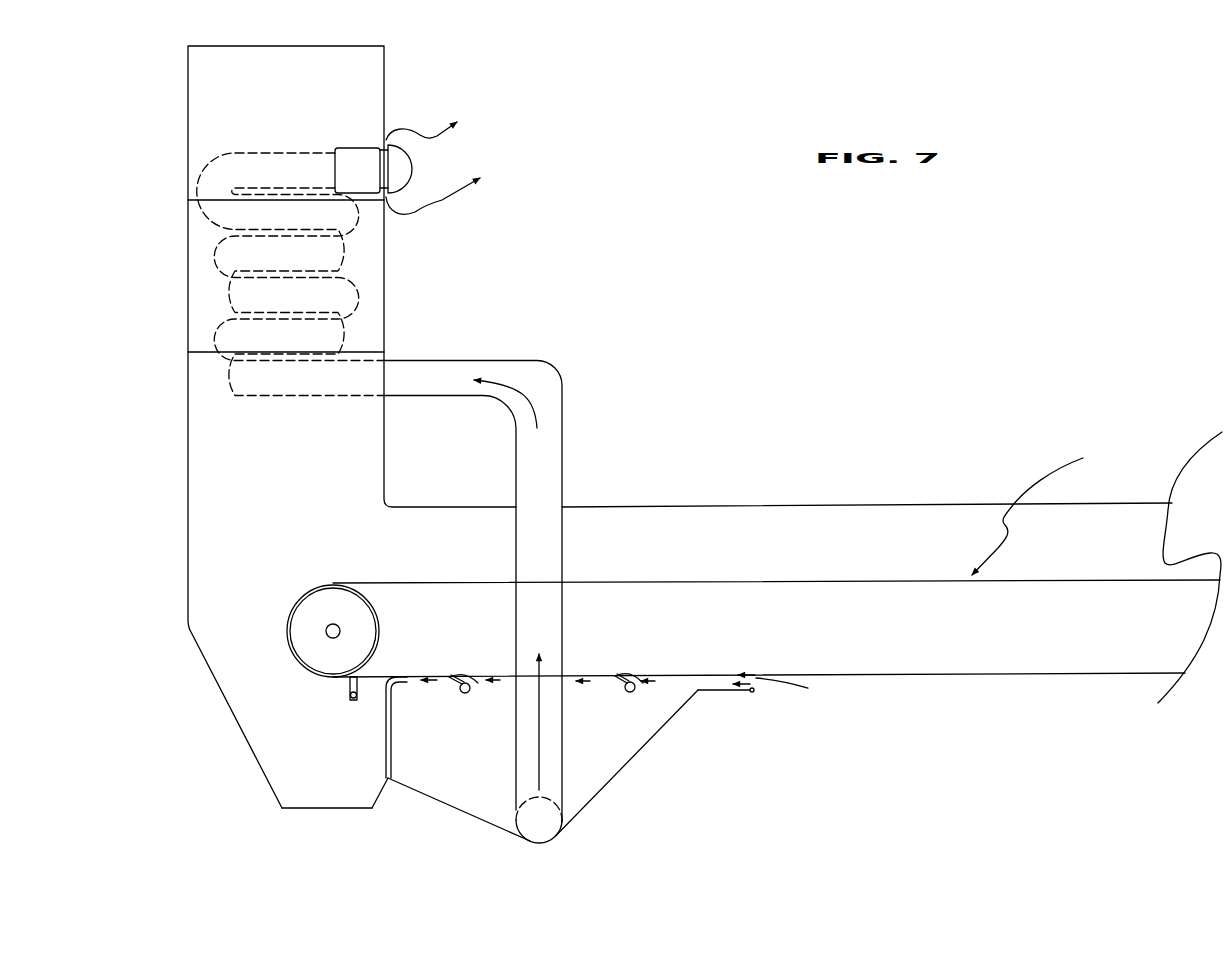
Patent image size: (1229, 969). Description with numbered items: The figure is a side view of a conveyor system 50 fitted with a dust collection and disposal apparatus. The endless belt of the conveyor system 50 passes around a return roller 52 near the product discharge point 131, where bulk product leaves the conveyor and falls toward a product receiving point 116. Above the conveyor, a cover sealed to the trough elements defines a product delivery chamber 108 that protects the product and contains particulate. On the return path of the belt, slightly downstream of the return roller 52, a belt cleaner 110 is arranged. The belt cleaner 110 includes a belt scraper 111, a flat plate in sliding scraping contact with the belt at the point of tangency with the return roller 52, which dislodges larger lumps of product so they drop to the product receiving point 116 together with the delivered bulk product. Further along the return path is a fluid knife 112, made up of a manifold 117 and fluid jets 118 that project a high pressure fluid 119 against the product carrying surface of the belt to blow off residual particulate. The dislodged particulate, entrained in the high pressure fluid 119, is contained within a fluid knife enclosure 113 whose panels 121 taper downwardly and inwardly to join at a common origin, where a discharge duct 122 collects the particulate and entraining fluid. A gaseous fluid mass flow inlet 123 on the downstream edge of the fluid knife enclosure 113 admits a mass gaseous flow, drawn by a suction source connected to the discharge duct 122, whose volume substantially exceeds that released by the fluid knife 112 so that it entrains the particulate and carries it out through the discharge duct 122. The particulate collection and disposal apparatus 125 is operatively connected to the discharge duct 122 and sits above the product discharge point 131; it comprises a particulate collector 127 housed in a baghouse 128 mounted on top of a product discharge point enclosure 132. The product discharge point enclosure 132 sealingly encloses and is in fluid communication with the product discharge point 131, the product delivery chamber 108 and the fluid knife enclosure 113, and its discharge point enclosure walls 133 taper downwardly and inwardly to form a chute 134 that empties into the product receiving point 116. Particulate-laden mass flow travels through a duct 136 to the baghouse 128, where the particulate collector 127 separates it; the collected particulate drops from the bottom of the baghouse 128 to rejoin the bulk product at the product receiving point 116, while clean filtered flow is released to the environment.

The conveyor system 50 is at (772, 384).
The return roller 52 is at (358, 628).
The product delivery chamber 108 is at (887, 510).
The belt cleaner 110 is at (459, 815).
The belt scraper 111 is at (350, 688).
The fluid knife 112 is at (459, 701).
The fluid knife enclosure 113 is at (386, 749).
The product receiving point 116 is at (340, 857).
The manifold 117 is at (469, 696).
The fluid jets 118 is at (475, 684).
The high pressure fluid 119 is at (448, 677).
The panels 121 is at (497, 826).
The discharge duct 122 is at (543, 834).
The gaseous fluid mass flow inlet 123 is at (758, 678).
The particulate collection and disposal apparatus 125 is at (188, 257).
The particulate collector 127 is at (363, 309).
The baghouse 128 is at (158, 174).
The product discharge point 131 is at (261, 581).
The product discharge point enclosure 132 is at (372, 476).
The discharge point enclosure walls 133 is at (238, 722).
The chute 134 is at (283, 793).
The duct 136 is at (545, 387).